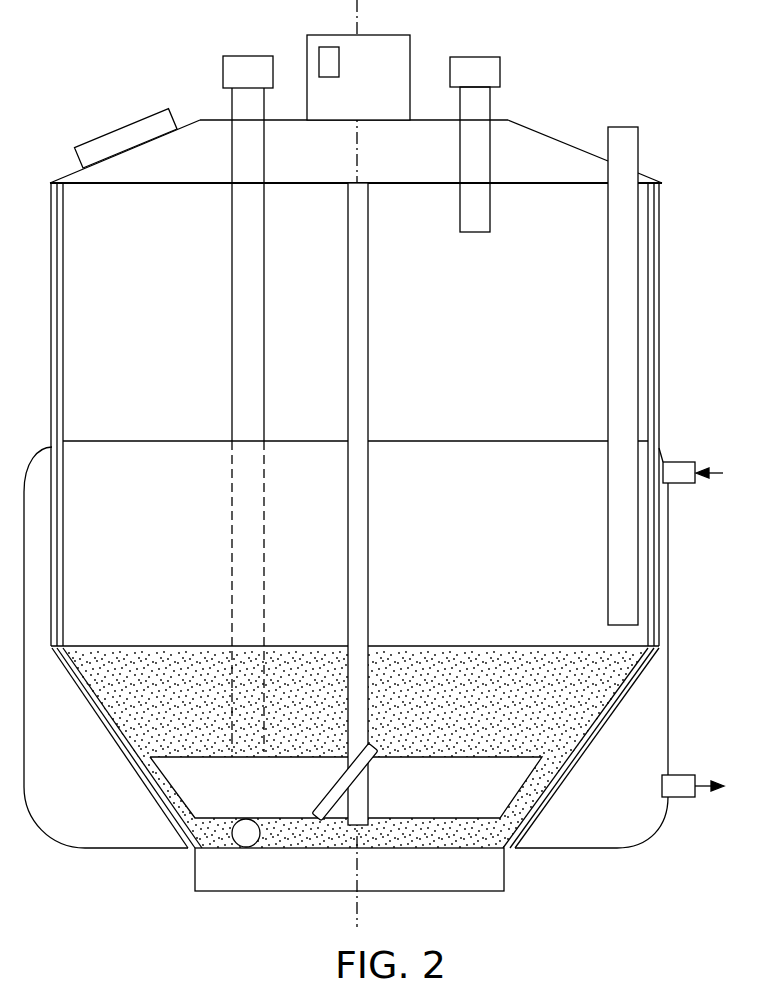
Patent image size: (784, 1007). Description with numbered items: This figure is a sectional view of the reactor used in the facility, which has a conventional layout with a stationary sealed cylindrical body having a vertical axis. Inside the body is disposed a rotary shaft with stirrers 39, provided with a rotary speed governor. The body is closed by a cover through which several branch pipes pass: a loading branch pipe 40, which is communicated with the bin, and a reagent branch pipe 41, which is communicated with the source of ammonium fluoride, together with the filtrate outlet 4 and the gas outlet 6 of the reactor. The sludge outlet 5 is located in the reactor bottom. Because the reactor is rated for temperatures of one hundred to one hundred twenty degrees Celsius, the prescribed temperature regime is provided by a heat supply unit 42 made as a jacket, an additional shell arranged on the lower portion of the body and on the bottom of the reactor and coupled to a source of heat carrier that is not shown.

The filtrate outlet 4 is at (627, 137).
The sludge outlet 5 is at (426, 876).
The gas outlet 6 is at (488, 62).
The rotary shaft with stirrers 39 is at (358, 244).
The loading branch pipe 40 is at (148, 128).
The reagent branch pipe 41 is at (242, 67).
The heat supply unit 42 is at (73, 828).